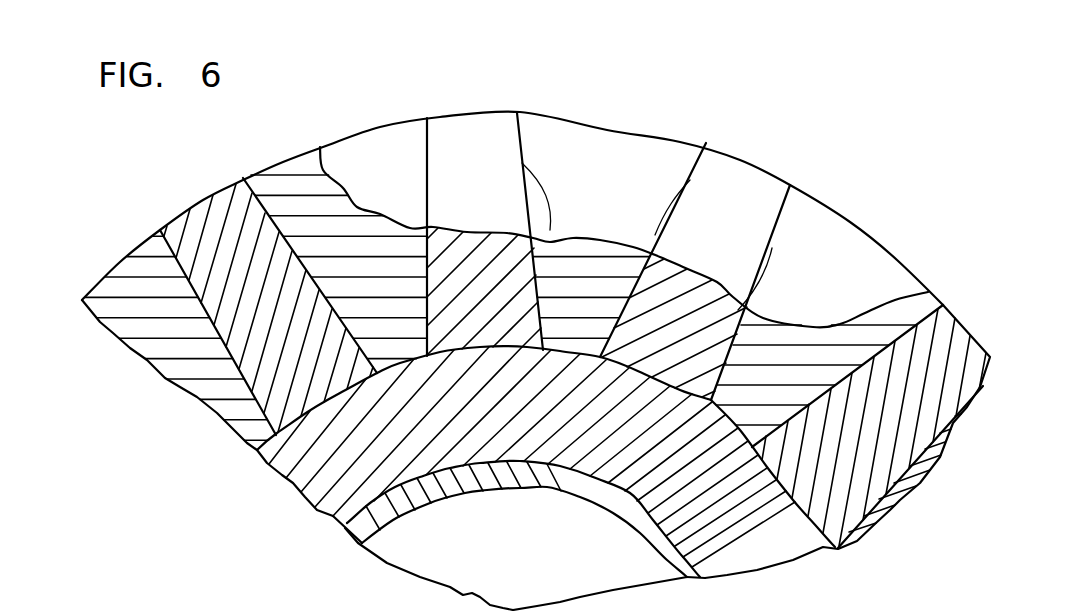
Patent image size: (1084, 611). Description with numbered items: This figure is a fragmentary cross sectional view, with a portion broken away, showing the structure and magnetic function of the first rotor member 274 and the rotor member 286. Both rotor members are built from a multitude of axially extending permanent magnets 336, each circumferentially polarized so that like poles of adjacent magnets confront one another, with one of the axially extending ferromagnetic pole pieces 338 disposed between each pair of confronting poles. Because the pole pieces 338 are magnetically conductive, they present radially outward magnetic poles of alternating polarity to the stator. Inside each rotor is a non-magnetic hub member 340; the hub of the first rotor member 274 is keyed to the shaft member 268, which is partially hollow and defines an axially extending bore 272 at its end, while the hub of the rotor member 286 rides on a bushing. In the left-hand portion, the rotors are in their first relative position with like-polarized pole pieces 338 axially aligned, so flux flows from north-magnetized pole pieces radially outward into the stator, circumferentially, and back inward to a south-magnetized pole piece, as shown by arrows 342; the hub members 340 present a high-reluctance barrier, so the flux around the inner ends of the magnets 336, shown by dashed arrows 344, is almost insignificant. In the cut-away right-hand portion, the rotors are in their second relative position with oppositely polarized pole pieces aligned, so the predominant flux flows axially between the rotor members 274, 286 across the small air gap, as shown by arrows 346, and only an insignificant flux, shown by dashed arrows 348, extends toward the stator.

The shaft member 268 is at (613, 504).
The axially extending bore 272 is at (465, 497).
The first rotor member 274 is at (272, 479).
The rotor member 286 is at (826, 195).
The permanent magnets 336 is at (263, 382).
The ferromagnetic pole pieces 338 is at (390, 133).
The non-magnetic hub members 340 is at (510, 443).
The arrows 342 is at (330, 305).
The dashed arrows 344 is at (553, 352).
The arrows 346 is at (415, 187).
The dashed arrows 348 is at (415, 112).